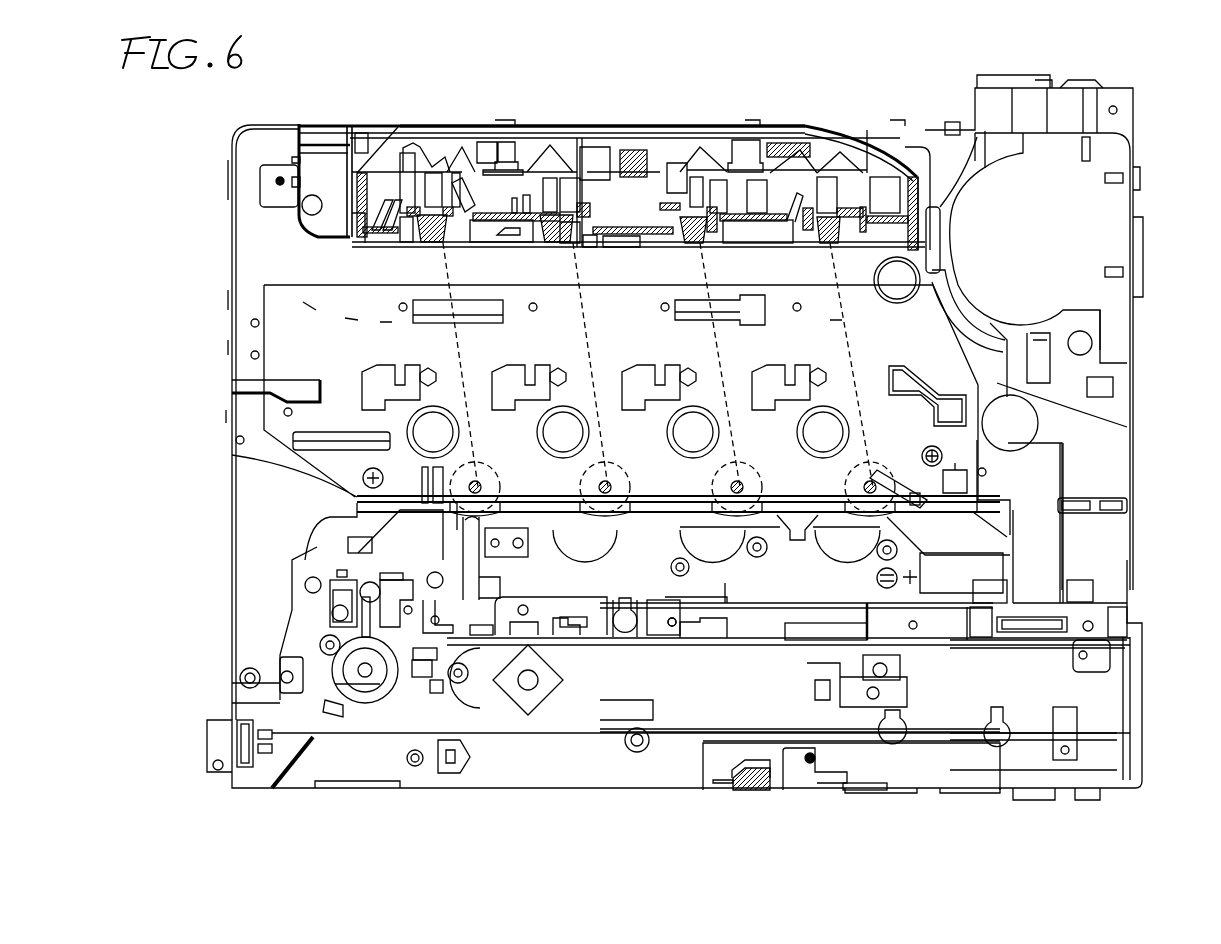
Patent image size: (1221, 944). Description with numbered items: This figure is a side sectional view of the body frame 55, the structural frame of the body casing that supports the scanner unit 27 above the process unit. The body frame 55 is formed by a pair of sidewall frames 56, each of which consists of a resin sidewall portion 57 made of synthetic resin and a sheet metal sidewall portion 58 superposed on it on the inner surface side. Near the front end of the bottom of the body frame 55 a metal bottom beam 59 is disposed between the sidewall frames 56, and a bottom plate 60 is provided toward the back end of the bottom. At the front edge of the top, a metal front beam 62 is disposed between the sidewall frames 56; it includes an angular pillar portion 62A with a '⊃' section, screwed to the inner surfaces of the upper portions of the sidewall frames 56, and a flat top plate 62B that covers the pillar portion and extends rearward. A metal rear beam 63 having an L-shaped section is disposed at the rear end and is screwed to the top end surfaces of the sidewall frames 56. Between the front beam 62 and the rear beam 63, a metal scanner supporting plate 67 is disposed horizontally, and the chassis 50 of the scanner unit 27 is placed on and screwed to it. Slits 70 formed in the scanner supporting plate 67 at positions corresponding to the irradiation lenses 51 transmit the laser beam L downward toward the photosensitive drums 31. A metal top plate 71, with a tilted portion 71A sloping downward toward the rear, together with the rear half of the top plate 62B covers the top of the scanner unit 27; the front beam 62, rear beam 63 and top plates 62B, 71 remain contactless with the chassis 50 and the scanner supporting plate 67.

The scanner unit 27 is at (500, 130).
The photosensitive drum 31 is at (651, 379).
The chassis 50 is at (930, 150).
The irradiation lens 51 is at (588, 250).
The body frame 55 is at (750, 88).
The sidewall frame 56 is at (1170, 413).
The resin sidewall portion 57 is at (1085, 473).
The sheet metal sidewall portion 58 is at (1127, 425).
The bottom beam 59 is at (357, 785).
The lower frame member 60 is at (883, 788).
The front beam 62 is at (318, 62).
The angular pillar portion 62A is at (345, 167).
The top plate 62B is at (392, 127).
The rear beam 63 is at (1068, 87).
The scanner supporting plate 67 is at (623, 250).
The slit 70 is at (572, 247).
The top plate 71 is at (595, 125).
The tilted portion 71A is at (868, 145).
The laser beam L is at (585, 342).